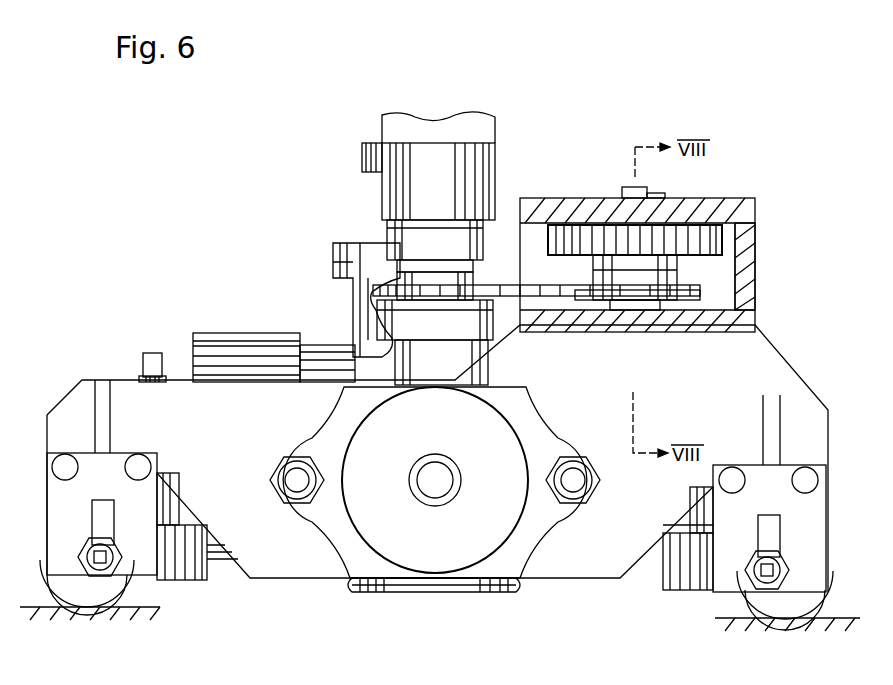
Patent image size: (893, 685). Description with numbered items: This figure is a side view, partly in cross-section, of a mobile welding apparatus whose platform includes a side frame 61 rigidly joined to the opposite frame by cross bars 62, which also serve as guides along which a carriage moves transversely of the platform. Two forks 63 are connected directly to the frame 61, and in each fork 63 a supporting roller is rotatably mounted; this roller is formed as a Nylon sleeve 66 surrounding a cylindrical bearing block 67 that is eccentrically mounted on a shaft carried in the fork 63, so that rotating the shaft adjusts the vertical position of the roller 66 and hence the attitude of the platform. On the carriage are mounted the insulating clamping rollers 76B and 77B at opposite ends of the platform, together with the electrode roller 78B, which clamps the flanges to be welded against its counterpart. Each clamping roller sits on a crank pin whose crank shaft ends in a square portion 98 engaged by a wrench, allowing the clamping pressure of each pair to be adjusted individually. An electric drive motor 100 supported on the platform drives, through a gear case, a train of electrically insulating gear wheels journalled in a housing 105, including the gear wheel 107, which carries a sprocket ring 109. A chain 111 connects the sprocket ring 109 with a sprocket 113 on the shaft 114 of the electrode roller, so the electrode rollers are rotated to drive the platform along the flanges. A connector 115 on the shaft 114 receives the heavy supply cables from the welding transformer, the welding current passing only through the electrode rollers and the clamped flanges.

The side frame 61 is at (300, 578).
The cross bar 62 is at (283, 496).
The fork 63 is at (58, 502).
The sleeve 66 is at (115, 603).
The bearing block 67 is at (120, 585).
The clamping roller 76B is at (672, 586).
The clamping roller 77B is at (210, 572).
The electrode roller 78B is at (520, 590).
The square portion of crank shaft 98 is at (150, 357).
The electric drive motor 100 is at (236, 342).
The housing 105 is at (567, 200).
The gear wheel 107 is at (752, 237).
The sprocket ring 109 is at (682, 290).
The chain 111 is at (553, 285).
The sprocket 113 is at (478, 284).
The shaft of electrode roller 114 is at (470, 266).
The connector 115 is at (497, 178).